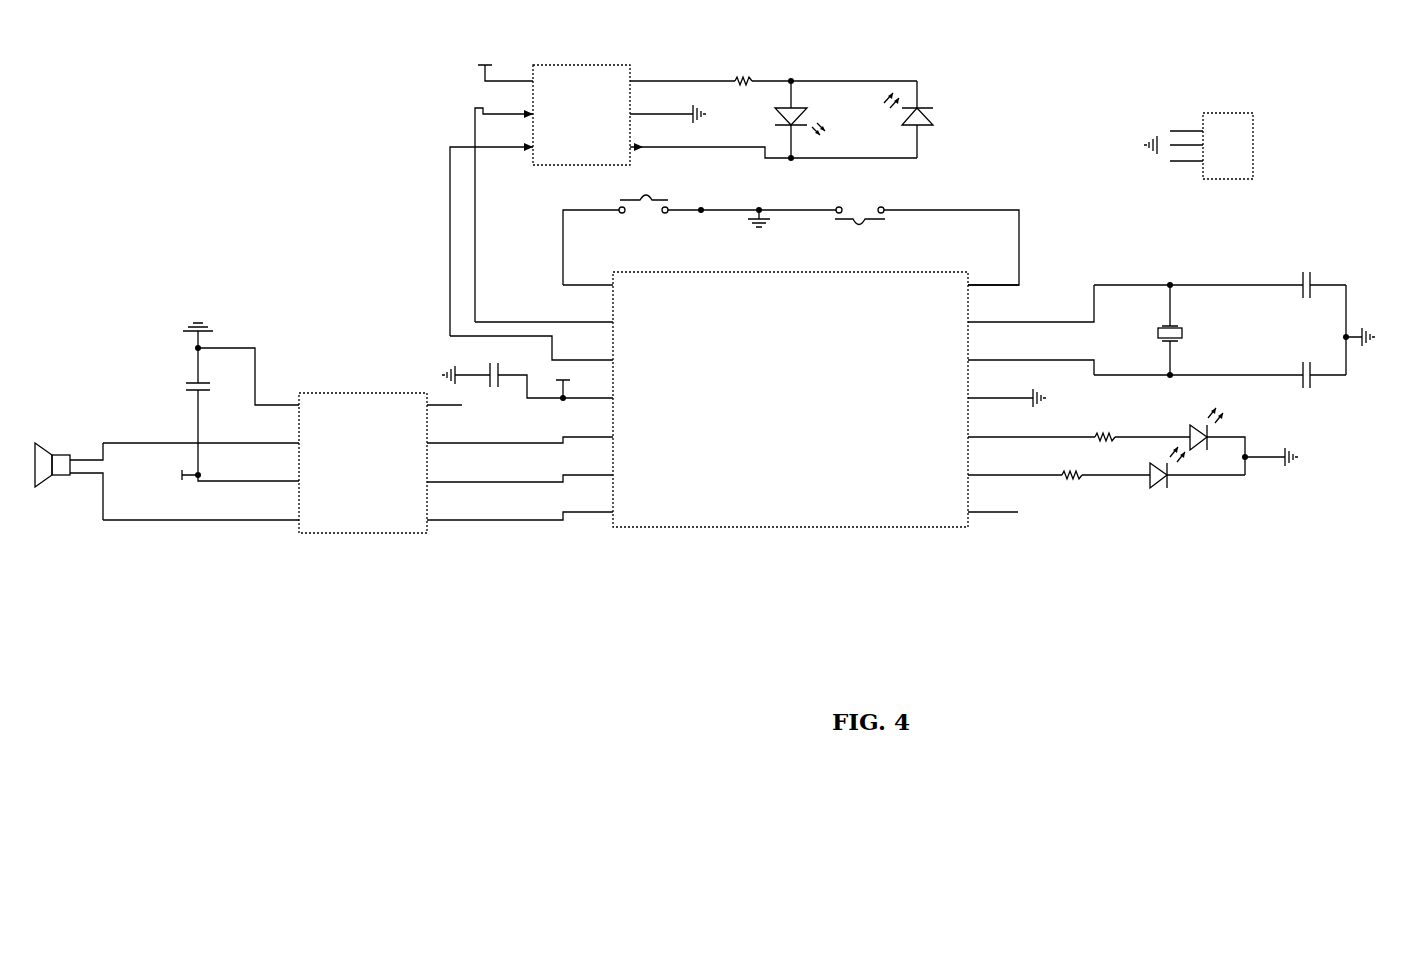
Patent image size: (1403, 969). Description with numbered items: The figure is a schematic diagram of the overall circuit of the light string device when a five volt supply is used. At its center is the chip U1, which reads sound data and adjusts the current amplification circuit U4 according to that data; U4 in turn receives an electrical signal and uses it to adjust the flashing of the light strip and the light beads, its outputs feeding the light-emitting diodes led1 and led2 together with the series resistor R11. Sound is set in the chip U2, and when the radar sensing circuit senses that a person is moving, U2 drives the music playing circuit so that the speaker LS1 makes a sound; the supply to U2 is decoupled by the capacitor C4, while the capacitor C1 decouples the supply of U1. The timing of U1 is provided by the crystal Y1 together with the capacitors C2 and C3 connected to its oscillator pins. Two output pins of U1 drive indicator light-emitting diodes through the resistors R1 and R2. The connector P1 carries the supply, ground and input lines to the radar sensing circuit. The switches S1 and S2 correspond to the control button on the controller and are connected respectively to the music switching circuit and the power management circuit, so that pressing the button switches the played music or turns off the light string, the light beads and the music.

The element U1 is at (761, 392).
The element U2 is at (282, 440).
The current amplification circuit U4 is at (683, 191).
The capacitor Cap1 0.1UF C1 is at (459, 382).
The capacitor Cap2 22pf C2 is at (1310, 294).
The capacitor Cap3 22pf C3 is at (1350, 353).
The capacitor Cap4 0.1UF C4 is at (212, 388).
The resistor Res1 1K R1 is at (1140, 440).
The resistor Res1 1K R2 is at (1104, 478).
The resistor Res11 10R R11 is at (820, 85).
The switch corresponding to the control button S1 is at (699, 230).
The switch corresponding to the control button S2 is at (927, 238).
The crystal XTAL Y1 is at (1220, 330).
The speaker LS1 is at (95, 471).
The Ladar connector P1 is at (1180, 149).
The LED 1 led1 is at (812, 119).
The LED 2 led2 is at (921, 119).